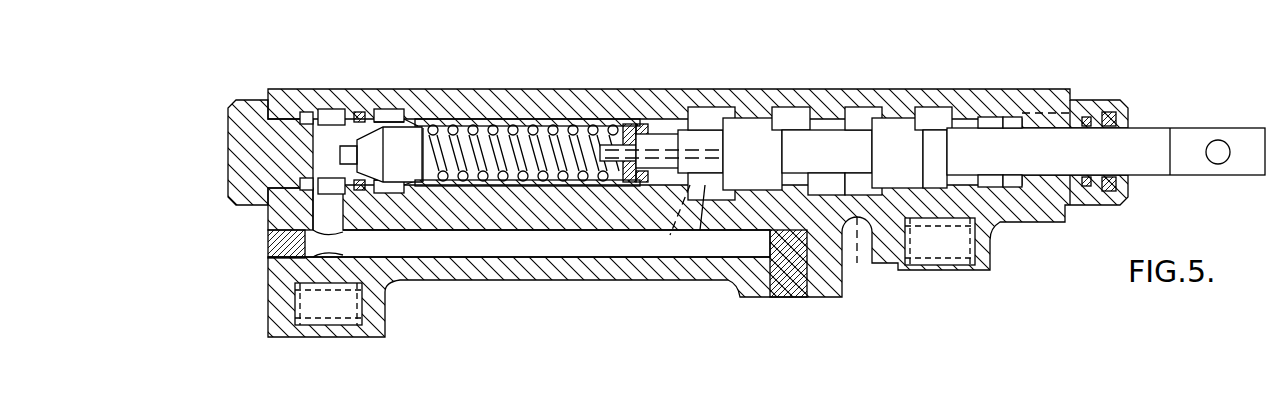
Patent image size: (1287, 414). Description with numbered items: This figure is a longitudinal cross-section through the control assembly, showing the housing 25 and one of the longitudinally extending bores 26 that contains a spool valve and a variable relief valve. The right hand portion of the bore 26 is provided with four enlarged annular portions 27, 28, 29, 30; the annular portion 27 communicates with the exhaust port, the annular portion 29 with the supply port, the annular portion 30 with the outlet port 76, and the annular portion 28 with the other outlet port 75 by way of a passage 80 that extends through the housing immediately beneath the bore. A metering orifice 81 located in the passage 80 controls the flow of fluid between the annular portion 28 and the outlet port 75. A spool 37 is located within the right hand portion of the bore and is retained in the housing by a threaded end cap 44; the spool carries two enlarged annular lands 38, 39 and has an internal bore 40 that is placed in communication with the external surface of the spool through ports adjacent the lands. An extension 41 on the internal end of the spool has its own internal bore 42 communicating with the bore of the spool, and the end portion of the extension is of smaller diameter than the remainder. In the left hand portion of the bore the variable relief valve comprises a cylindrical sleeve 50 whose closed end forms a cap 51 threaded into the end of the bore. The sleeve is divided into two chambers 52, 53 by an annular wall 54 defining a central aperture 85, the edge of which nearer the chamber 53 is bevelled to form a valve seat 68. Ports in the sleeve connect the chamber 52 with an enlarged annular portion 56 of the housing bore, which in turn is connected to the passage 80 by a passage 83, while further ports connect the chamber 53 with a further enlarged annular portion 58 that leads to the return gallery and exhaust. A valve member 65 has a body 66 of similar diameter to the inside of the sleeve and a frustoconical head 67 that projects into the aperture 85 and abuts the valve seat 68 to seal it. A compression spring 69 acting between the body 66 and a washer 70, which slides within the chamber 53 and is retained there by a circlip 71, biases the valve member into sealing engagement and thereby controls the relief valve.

The housing 25 is at (992, 100).
The longitudinally extending bore 26 is at (680, 118).
The enlarged annular portion 27 is at (710, 112).
The enlarged annular portion 28 is at (790, 110).
The enlarged annular portion 29 is at (860, 110).
The enlarged annular portion 30 is at (935, 110).
The spool 37 is at (1152, 128).
The enlarged annular land 38 is at (762, 137).
The enlarged annular land 39 is at (907, 137).
The internal bore 40 is at (861, 240).
The extension 41 is at (706, 219).
The internal bore 42 is at (669, 219).
The threaded end cap 44 is at (1100, 100).
The cylindrical sleeve 50 is at (500, 128).
The cap 51 is at (237, 100).
The chamber 52 is at (305, 116).
The chamber 53 is at (540, 124).
The annular wall 54 is at (358, 113).
The enlarged annular portion 56 is at (332, 110).
The further enlarged annular portion 58 is at (388, 112).
The valve member 65 is at (400, 128).
The body 66 is at (406, 159).
The frustoconical head 67 is at (368, 200).
The valve seat 68 is at (372, 110).
The compression spring 69 is at (465, 130).
The washer 70 is at (628, 124).
The circlip 71 is at (643, 124).
The outlet port 75 is at (325, 320).
The outlet port 76 is at (933, 250).
The passage 80 is at (612, 258).
The metering orifice 81 is at (777, 290).
The passage 83 is at (325, 244).
The central aperture 85 is at (330, 205).